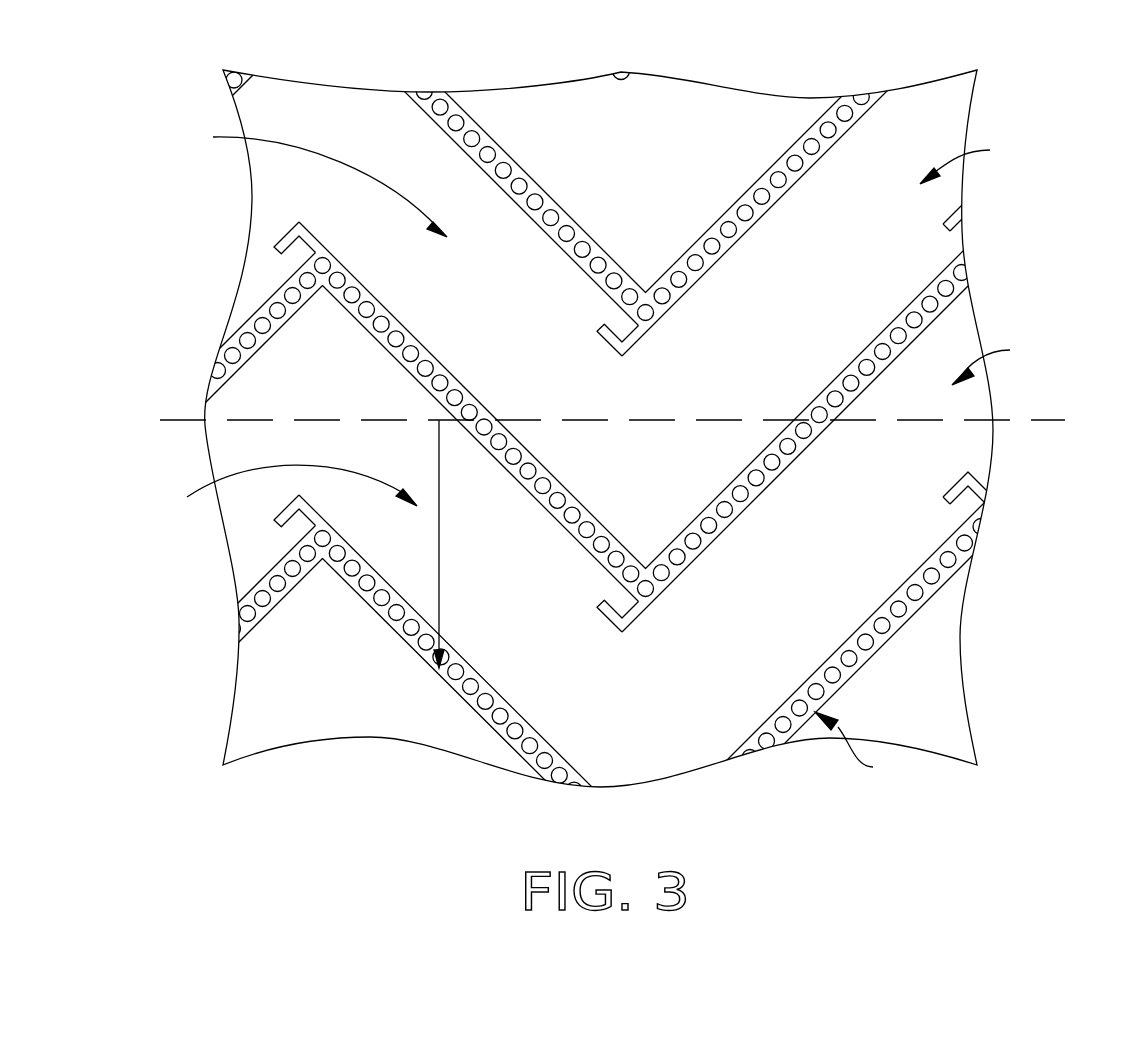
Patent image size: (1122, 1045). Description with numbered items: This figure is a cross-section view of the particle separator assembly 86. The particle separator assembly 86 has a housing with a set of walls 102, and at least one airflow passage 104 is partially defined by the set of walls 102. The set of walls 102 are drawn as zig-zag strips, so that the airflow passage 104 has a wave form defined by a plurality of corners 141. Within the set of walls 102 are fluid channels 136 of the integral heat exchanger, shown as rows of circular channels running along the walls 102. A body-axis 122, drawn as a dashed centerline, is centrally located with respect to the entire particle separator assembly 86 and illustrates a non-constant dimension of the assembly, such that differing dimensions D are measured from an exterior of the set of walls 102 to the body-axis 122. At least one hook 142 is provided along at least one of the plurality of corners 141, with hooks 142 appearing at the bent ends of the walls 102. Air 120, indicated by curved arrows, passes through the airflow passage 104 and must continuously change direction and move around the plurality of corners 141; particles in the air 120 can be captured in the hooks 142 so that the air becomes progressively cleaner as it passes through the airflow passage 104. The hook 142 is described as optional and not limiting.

The set of walls 102 is at (817, 132).
The fluid channel 136 is at (519, 186).
The corners 141 is at (637, 342).
The hook 142 is at (313, 236).
The air 120 is at (292, 319).
The airflow passage 104 is at (995, 260).
The body-axis 122 is at (915, 428).
The dimension D is at (440, 537).
The particle separator assembly 86 is at (860, 748).